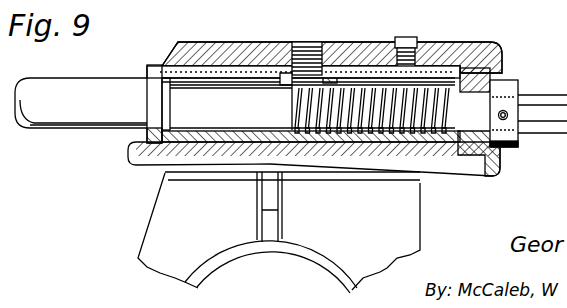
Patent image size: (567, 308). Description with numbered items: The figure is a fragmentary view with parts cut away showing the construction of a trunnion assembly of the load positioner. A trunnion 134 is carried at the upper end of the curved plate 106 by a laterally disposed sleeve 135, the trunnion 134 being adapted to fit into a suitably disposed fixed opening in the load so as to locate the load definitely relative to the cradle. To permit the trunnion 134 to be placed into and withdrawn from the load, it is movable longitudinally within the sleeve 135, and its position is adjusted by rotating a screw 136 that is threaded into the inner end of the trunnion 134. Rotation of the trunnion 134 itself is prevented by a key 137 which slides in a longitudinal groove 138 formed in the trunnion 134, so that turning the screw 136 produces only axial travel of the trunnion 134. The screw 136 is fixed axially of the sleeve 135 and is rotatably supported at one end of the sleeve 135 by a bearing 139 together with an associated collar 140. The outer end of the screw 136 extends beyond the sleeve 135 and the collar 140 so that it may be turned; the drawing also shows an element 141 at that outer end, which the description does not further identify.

The curved plate 106 is at (162, 227).
The trunnion 134 is at (62, 129).
The sleeve 135 is at (240, 50).
The screw 136 is at (430, 112).
The key 137 is at (300, 47).
The longitudinal groove 138 is at (199, 70).
The bearing 139 is at (478, 162).
The collar 140 is at (515, 148).
The shaft 141 is at (543, 128).